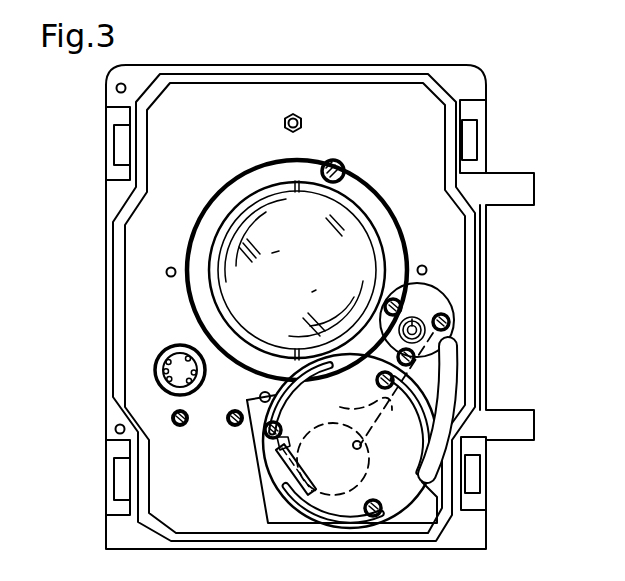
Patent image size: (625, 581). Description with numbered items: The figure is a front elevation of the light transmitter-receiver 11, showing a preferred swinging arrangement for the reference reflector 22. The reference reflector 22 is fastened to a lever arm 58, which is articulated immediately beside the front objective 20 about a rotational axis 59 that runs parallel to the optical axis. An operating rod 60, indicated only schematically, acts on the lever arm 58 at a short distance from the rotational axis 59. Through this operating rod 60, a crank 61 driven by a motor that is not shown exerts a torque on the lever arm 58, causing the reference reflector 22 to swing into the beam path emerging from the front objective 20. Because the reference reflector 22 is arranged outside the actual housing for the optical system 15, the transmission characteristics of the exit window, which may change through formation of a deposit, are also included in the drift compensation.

The light transmitter-receiver 11 is at (488, 67).
The housing for the optical system 15 is at (321, 66).
The front objective 20 is at (338, 218).
The reference reflector 22 is at (393, 427).
The lever arm 58 is at (436, 362).
The rotational axis 59 is at (412, 316).
The operating rod 60 is at (358, 397).
The crank 61 is at (360, 452).